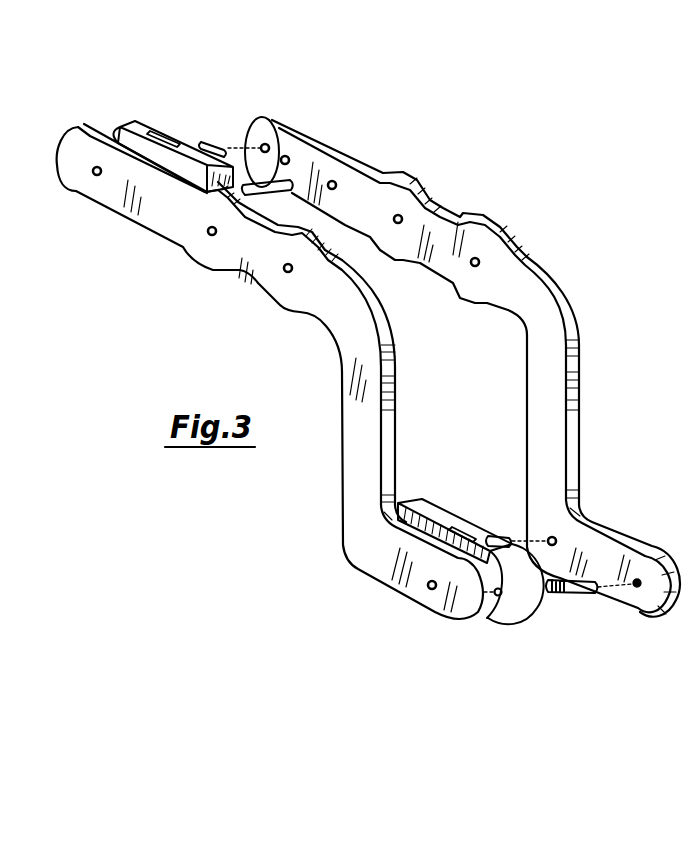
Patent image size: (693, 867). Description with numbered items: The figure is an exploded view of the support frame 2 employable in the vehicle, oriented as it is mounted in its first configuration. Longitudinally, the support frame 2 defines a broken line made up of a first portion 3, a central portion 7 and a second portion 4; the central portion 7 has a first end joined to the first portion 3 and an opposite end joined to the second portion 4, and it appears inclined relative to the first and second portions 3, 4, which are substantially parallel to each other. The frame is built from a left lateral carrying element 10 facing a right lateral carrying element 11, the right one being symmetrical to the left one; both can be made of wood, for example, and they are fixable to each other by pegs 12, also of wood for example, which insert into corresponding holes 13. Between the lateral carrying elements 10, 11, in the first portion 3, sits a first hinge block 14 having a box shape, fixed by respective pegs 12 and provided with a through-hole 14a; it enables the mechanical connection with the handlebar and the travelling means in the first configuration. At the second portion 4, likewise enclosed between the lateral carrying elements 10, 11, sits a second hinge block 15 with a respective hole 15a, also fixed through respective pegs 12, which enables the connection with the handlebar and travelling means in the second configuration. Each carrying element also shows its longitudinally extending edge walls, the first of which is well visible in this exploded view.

The support frame 2 is at (494, 114).
The first portion 3 is at (449, 346).
The second portion 4 is at (270, 400).
The central portion 7 is at (318, 481).
The left lateral carrying element 10 is at (358, 548).
The right lateral carrying element 11 is at (553, 427).
The pegs 12 is at (208, 146).
The holes 13 is at (256, 143).
The first hinge block 14 is at (142, 113).
The through-hole 14a is at (160, 130).
The second hinge block 15 is at (471, 579).
The hole 15a is at (473, 537).